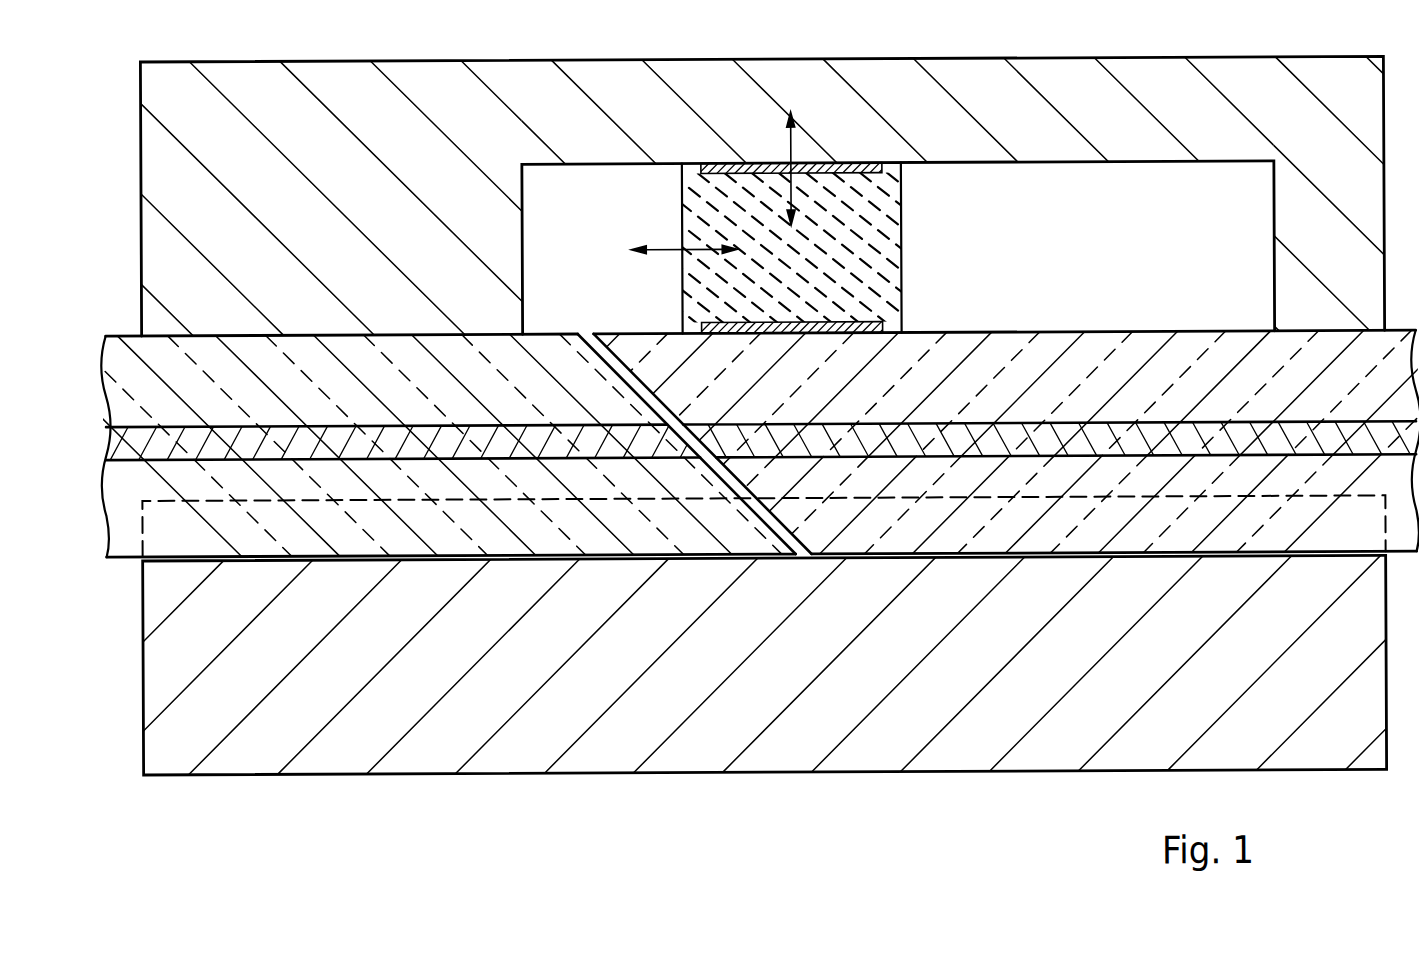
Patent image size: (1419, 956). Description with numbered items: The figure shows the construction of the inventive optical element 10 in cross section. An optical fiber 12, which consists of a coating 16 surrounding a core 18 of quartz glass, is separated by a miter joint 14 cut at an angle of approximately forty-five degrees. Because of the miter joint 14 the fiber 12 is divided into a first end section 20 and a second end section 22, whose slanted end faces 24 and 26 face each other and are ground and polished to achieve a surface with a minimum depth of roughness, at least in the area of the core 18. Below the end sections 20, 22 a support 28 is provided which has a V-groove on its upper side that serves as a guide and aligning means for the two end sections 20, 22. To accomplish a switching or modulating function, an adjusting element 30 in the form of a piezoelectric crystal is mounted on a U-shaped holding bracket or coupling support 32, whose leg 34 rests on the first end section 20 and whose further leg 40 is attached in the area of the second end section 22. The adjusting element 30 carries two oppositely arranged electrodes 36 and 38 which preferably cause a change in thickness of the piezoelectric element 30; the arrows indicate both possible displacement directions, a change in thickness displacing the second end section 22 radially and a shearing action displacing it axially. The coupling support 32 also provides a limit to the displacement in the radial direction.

The optical element 10 is at (709, 415).
The optical fiber 12 is at (128, 520).
The miter joint 14 is at (777, 525).
The coating 16 is at (203, 353).
The core 18 is at (414, 448).
The first end section 20 is at (445, 539).
The second end section 22 is at (1057, 352).
The slanted end face 24 is at (628, 352).
The slanted end face 26 is at (757, 510).
The support 28 is at (1145, 704).
The adjusting element 30 is at (864, 214).
The coupling support 32 is at (695, 129).
The leg 34 is at (320, 258).
The electrode 36 is at (858, 175).
The electrode 38 is at (851, 328).
The further leg 40 is at (1337, 254).